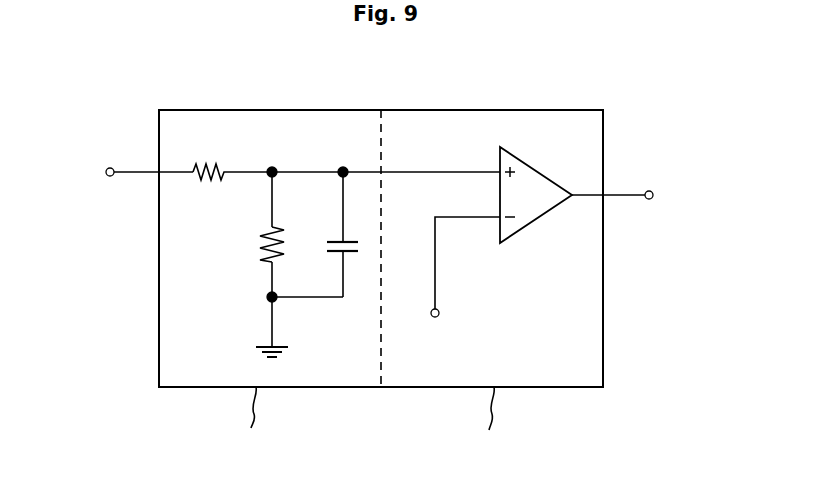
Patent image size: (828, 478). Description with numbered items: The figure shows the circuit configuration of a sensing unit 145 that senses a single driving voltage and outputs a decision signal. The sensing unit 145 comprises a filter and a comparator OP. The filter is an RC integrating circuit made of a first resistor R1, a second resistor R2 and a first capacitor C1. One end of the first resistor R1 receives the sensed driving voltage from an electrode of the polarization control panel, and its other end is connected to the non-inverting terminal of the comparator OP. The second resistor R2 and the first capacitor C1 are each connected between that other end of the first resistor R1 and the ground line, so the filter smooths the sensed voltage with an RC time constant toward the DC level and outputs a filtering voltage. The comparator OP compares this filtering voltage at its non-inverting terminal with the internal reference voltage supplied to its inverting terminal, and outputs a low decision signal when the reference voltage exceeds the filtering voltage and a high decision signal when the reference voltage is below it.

The sensing unit 145 is at (430, 110).
The first resistor R1 is at (210, 187).
The second resistor R2 is at (257, 244).
The first capacitor C1 is at (329, 249).
The comparator OP is at (537, 168).